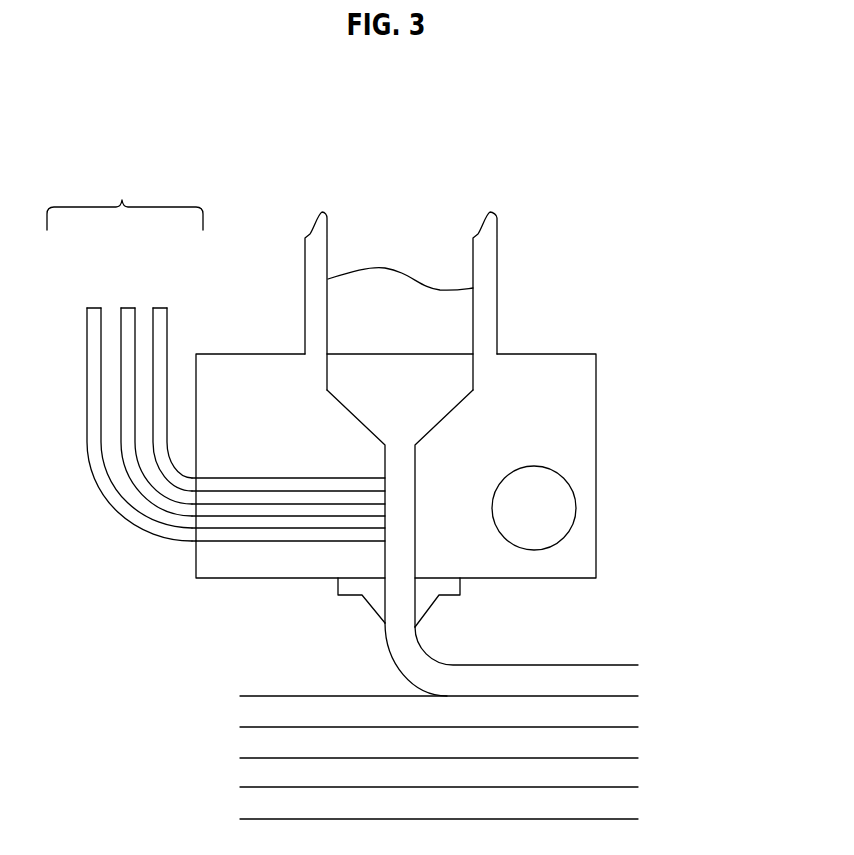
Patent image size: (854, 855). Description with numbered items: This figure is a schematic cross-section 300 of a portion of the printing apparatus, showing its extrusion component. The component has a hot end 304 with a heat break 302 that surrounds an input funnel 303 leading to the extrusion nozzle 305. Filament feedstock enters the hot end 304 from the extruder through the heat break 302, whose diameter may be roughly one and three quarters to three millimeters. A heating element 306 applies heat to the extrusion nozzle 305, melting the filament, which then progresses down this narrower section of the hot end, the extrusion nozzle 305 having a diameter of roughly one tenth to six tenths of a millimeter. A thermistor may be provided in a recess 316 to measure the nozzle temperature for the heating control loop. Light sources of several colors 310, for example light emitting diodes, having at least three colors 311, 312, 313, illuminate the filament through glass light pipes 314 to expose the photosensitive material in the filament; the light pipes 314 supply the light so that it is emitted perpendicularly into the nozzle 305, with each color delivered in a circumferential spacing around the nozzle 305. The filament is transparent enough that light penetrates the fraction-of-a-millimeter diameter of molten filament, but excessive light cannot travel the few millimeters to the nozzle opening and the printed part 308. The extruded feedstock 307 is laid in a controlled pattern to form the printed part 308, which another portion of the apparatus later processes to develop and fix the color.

The schematic cross-section 300 is at (664, 177).
The heat break 302 is at (486, 274).
The input funnel 303 is at (413, 354).
The hot end 304 is at (596, 397).
The extrusion nozzle 305 is at (415, 473).
The heating element 306 is at (577, 500).
The extruded feedstock 307 is at (419, 643).
The printed part 308 is at (608, 743).
The light sources of several colors 310 is at (122, 200).
The first color 311 is at (86, 323).
The second color 312 is at (124, 322).
The third color 313 is at (167, 323).
The glass light pipes 314 is at (105, 490).
The recess 316 is at (196, 548).